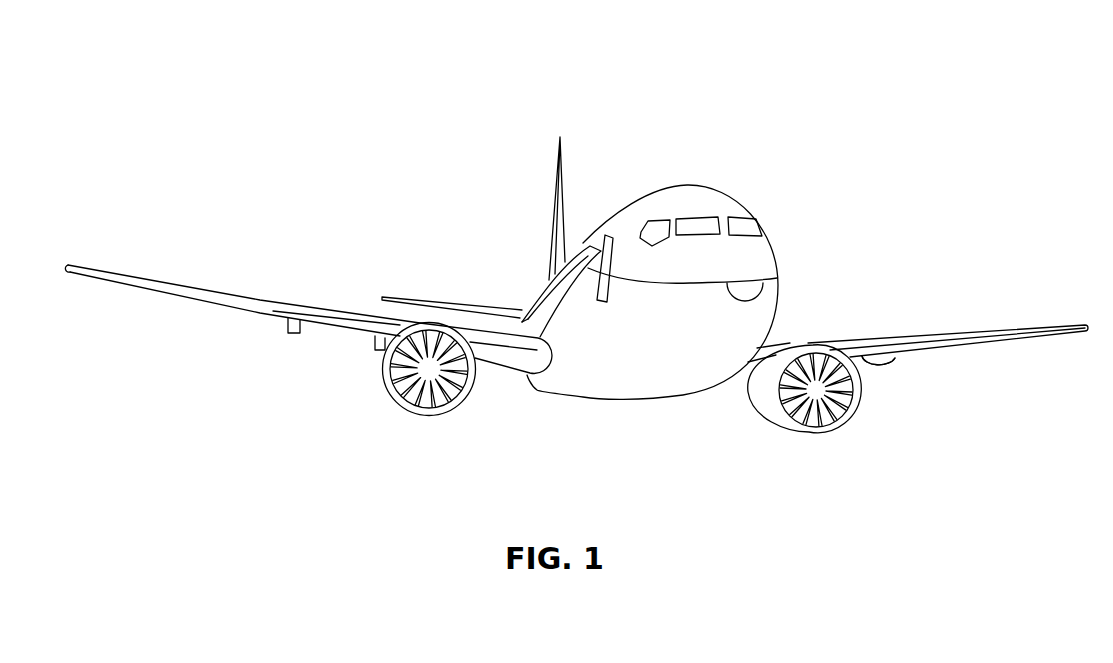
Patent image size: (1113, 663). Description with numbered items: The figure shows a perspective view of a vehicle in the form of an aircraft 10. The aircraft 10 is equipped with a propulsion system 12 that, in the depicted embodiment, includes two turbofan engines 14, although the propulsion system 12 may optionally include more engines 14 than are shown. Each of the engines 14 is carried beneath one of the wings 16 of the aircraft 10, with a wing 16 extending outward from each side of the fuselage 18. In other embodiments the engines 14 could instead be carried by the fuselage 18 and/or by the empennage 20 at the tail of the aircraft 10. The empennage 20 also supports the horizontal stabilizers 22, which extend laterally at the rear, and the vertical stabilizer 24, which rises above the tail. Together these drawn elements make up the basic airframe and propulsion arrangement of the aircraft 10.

The aircraft 10 is at (327, 88).
The propulsion system 12 is at (897, 427).
The turbofan engines 14 is at (424, 416).
The wings 16 is at (208, 288).
The fuselage 18 is at (780, 248).
The empennage 20 is at (548, 280).
The horizontal stabilizers 22 is at (420, 298).
The vertical stabilizer 24 is at (555, 177).